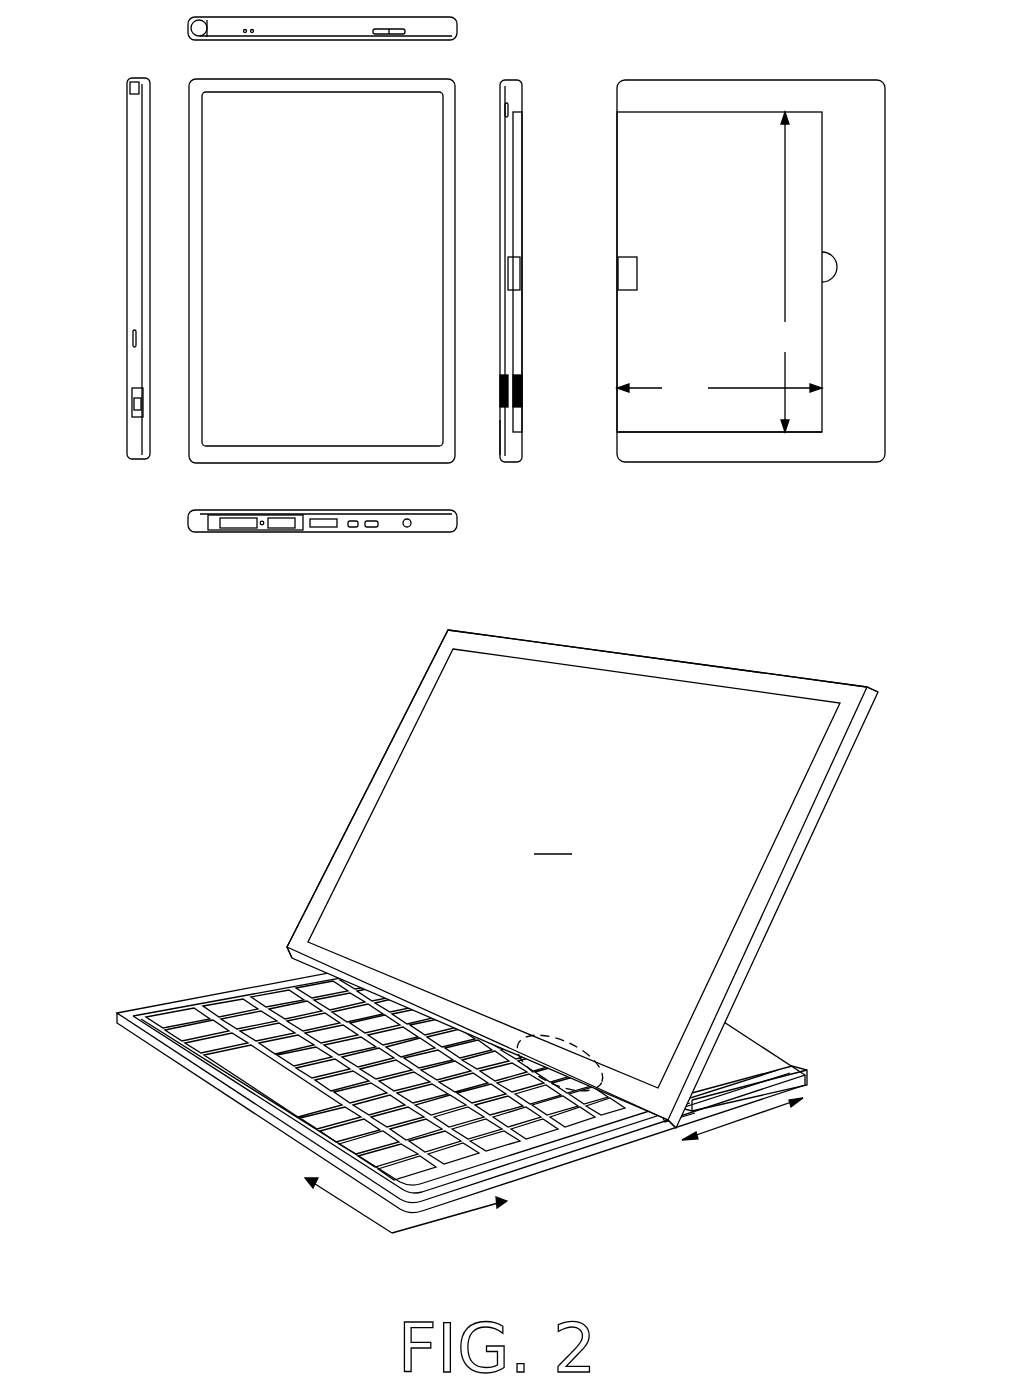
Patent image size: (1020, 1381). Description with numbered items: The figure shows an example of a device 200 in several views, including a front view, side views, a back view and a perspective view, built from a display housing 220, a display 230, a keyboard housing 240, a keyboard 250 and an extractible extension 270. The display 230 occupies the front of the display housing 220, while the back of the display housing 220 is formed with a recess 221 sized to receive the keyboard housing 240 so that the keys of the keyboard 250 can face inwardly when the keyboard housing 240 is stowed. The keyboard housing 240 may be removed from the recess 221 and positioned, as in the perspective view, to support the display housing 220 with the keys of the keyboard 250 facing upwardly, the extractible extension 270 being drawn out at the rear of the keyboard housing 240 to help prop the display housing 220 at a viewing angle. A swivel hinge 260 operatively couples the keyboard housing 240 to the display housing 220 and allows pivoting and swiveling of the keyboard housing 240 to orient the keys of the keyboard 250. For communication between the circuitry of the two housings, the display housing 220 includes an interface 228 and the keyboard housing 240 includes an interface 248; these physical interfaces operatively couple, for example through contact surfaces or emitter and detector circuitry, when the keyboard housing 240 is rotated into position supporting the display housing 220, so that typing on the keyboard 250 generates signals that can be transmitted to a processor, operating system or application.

The device 200 is at (140, 24).
The display housing 220 is at (207, 463).
The recess 221 is at (767, 433).
The interface 228 is at (500, 413).
The display 230 is at (302, 277).
The keyboard housing 240 is at (518, 153).
The interface 248 is at (520, 407).
The keyboard 250 is at (205, 962).
The swivel hinge 260 is at (518, 272).
The extractible extension 270 is at (772, 1072).